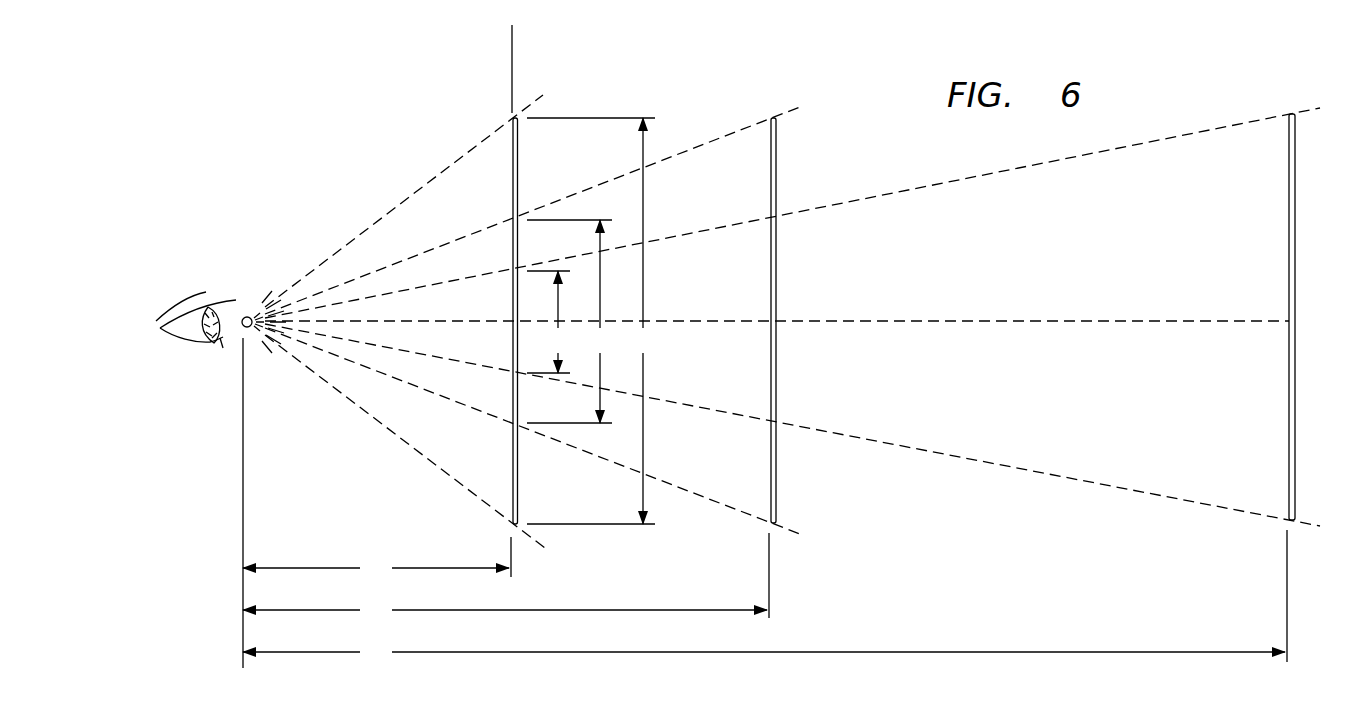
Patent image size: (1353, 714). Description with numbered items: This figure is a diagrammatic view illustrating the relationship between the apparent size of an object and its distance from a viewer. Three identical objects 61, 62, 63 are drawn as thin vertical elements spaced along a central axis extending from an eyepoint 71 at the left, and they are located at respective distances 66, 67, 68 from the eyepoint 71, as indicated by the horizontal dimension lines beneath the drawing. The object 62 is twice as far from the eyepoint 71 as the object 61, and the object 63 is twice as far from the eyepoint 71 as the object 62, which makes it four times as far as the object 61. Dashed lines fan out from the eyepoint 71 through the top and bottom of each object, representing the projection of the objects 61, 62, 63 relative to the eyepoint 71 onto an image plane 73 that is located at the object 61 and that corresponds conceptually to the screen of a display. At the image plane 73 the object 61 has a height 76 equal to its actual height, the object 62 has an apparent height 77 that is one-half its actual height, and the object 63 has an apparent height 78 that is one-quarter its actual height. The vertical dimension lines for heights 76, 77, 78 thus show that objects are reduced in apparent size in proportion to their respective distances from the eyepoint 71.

The eyepoint 71 is at (247, 317).
The image plane 73 is at (512, 65).
The object 61 is at (512, 448).
The object 62 is at (770, 446).
The object 63 is at (1288, 443).
The distance 66 is at (377, 559).
The distance 67 is at (506, 578).
The distance 68 is at (765, 598).
The height 76 is at (593, 321).
The apparent height 77 is at (571, 321).
The apparent height 78 is at (550, 322).